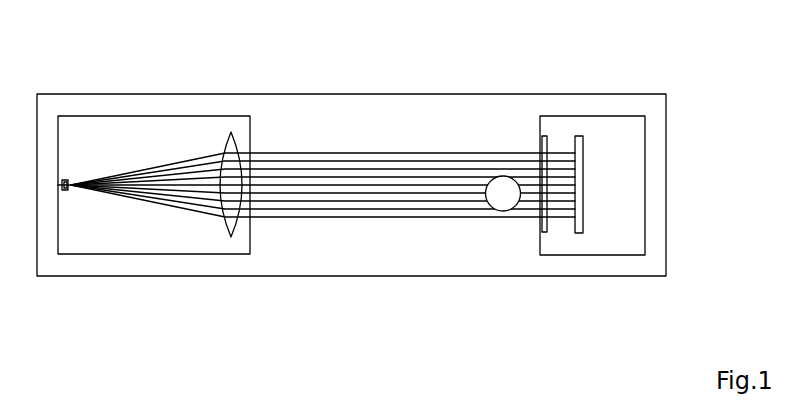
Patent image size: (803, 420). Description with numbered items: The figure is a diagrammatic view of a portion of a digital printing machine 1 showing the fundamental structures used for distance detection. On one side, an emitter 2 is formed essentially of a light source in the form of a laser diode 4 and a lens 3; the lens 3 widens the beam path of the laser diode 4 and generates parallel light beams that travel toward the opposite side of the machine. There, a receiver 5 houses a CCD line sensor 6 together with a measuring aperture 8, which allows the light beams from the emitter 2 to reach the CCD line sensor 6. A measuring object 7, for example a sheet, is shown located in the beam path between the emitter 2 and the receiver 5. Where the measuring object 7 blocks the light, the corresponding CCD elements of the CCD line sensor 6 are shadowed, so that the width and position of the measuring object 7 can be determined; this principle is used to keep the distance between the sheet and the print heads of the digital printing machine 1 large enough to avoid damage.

The digital printing machine 1 is at (657, 196).
The emitter 2 is at (163, 130).
The lens 3 is at (222, 138).
The laser diode 4 is at (66, 192).
The receiver 5 is at (617, 133).
The CCD line sensor 6 is at (583, 232).
The measuring object 7 is at (502, 197).
The measuring aperture 8 is at (545, 232).